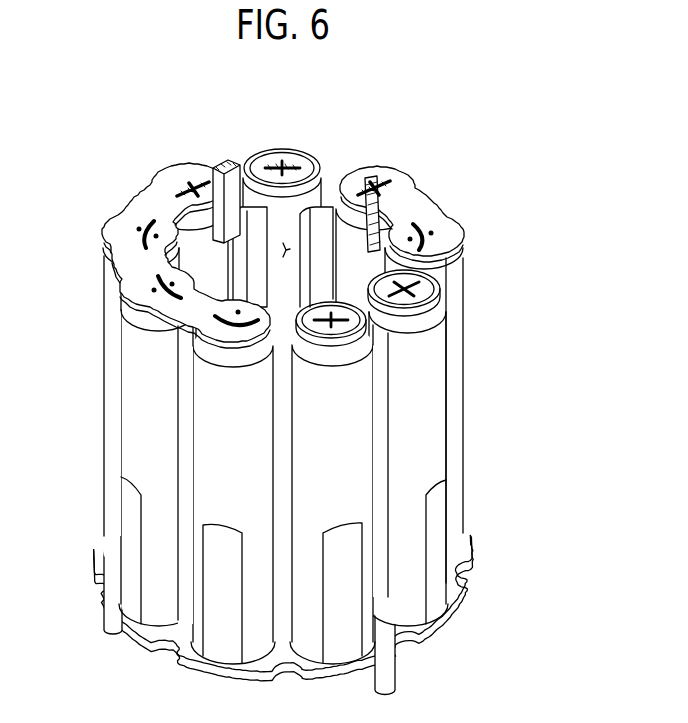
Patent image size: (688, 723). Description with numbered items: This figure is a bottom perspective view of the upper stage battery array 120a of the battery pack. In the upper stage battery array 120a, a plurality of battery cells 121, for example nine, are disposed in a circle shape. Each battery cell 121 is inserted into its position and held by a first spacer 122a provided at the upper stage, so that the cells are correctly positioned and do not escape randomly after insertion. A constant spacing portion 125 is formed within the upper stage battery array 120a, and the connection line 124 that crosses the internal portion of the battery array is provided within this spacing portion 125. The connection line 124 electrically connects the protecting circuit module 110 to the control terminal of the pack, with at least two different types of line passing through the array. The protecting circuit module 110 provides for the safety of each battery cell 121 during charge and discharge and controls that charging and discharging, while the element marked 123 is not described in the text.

The upper stage battery array 120a is at (530, 70).
The protecting circuit module 110 is at (462, 588).
The first spacer 122a is at (442, 388).
The battery cell 121 is at (108, 230).
The connection tab 123 is at (160, 192).
The connection line 124 is at (241, 160).
The spacing portion 125 is at (290, 250).